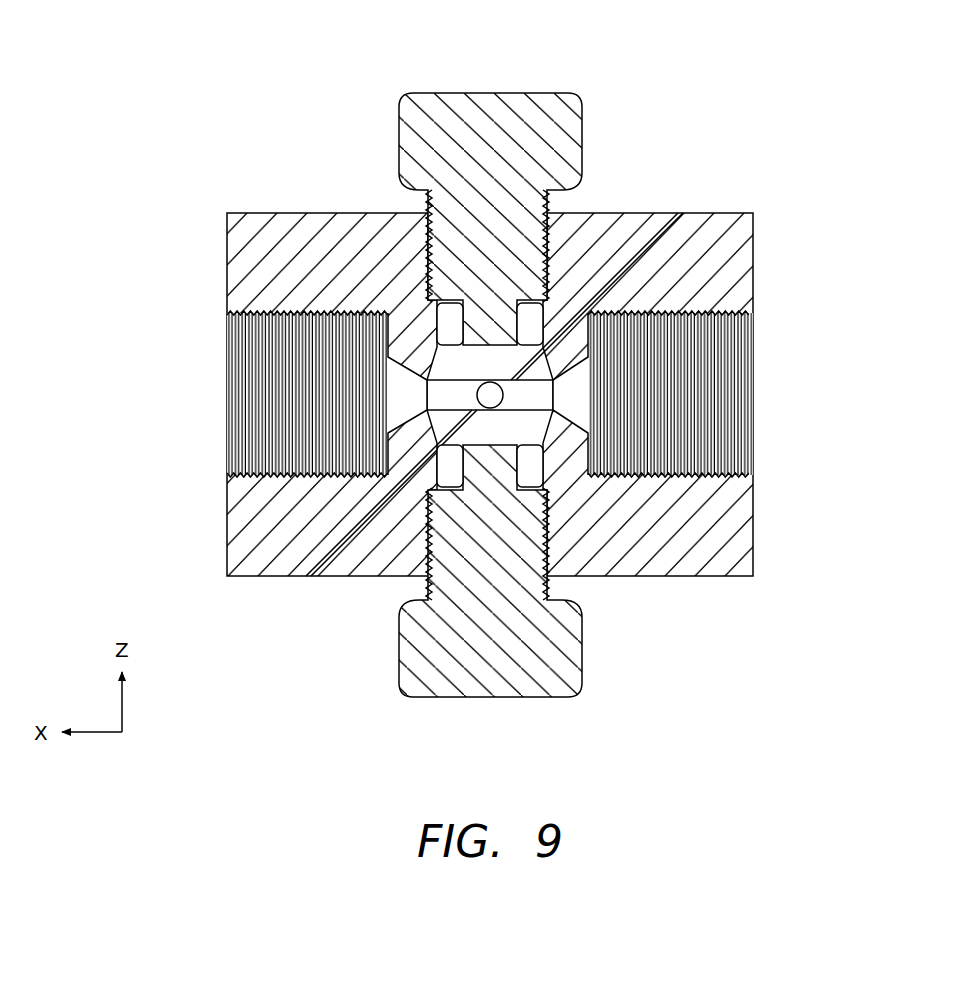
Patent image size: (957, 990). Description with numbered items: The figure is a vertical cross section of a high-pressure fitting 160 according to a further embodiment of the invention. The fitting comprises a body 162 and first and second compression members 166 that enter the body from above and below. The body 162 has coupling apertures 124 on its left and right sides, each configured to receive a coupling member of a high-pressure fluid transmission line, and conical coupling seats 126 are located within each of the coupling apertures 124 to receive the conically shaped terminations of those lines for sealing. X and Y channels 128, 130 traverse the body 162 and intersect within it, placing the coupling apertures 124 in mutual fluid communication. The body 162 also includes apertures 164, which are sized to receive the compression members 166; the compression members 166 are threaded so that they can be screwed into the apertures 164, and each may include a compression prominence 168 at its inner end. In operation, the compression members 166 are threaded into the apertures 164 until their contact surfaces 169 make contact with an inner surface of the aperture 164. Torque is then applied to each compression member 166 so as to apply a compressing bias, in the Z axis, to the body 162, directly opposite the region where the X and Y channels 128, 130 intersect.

The high-pressure fitting 160 is at (188, 143).
The body 162 is at (250, 258).
The apertures 164 is at (490, 396).
The compression members 166 is at (486, 130).
The compression prominence 168 is at (547, 318).
The contact surfaces 169 is at (472, 357).
The coupling apertures 124 is at (290, 465).
The conical coupling seats 126 is at (400, 402).
The X channel 128 is at (320, 577).
The Y channel 130 is at (660, 235).